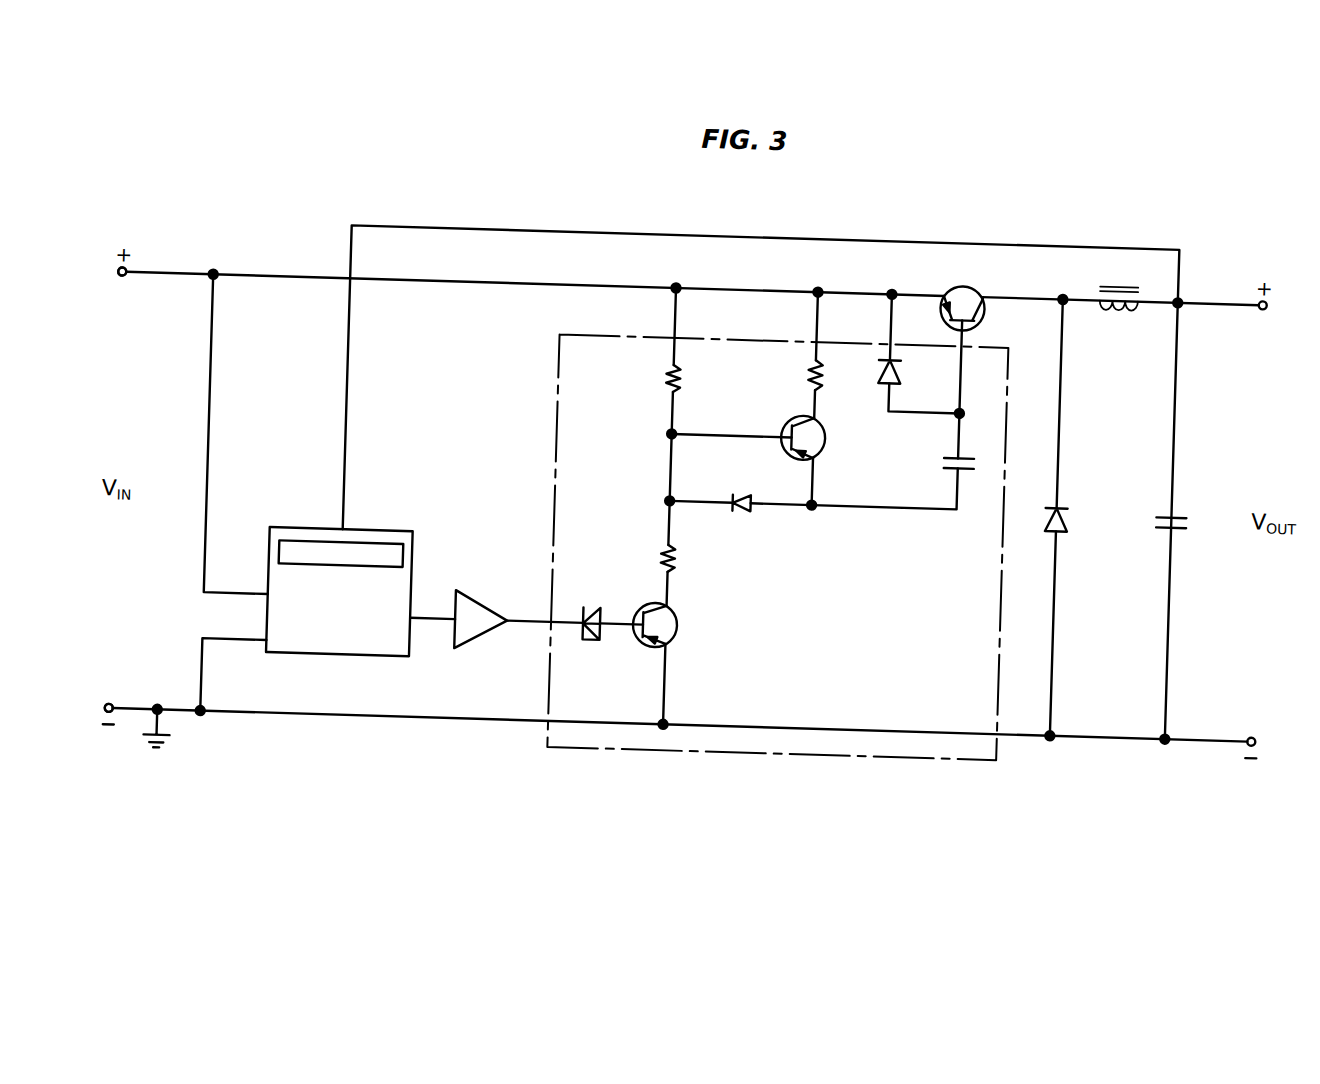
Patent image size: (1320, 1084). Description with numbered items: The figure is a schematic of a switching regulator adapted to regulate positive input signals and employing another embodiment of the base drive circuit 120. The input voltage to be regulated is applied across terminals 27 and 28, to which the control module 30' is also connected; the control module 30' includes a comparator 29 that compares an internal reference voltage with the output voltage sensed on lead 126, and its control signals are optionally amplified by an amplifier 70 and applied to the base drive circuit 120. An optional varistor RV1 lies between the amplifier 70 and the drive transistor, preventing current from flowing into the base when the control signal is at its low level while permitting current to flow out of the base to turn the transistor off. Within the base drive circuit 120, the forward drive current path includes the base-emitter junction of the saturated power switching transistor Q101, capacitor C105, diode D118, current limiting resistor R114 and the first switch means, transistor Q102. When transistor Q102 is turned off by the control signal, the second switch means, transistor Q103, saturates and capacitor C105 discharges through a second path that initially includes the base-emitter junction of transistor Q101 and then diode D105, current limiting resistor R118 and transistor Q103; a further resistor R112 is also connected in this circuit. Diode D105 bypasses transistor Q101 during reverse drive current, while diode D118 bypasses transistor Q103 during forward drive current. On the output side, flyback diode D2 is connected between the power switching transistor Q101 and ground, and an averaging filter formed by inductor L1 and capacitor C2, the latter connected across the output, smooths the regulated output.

The terminal 27 is at (118, 286).
The terminal 28 is at (114, 719).
The comparator 29 is at (411, 566).
The control module 30' is at (367, 607).
The amplifier 70 is at (488, 610).
The lead 126 is at (703, 235).
The base drive circuit 120 is at (655, 751).
The power switching transistor Q101 is at (977, 283).
The first switch means transistor Q102 is at (687, 626).
The second switch means transistor Q103 is at (829, 433).
The resistor R112 is at (668, 382).
The current limiting resistor R114 is at (678, 560).
The current limiting resistor R118 is at (811, 378).
The diode D105 is at (899, 367).
The diode D118 is at (745, 492).
The capacitor C105 is at (930, 463).
The varistor RV1 is at (600, 609).
The inductor L1 is at (1118, 310).
The flyback diode D2 is at (1042, 519).
The capacitor C2 is at (1153, 522).